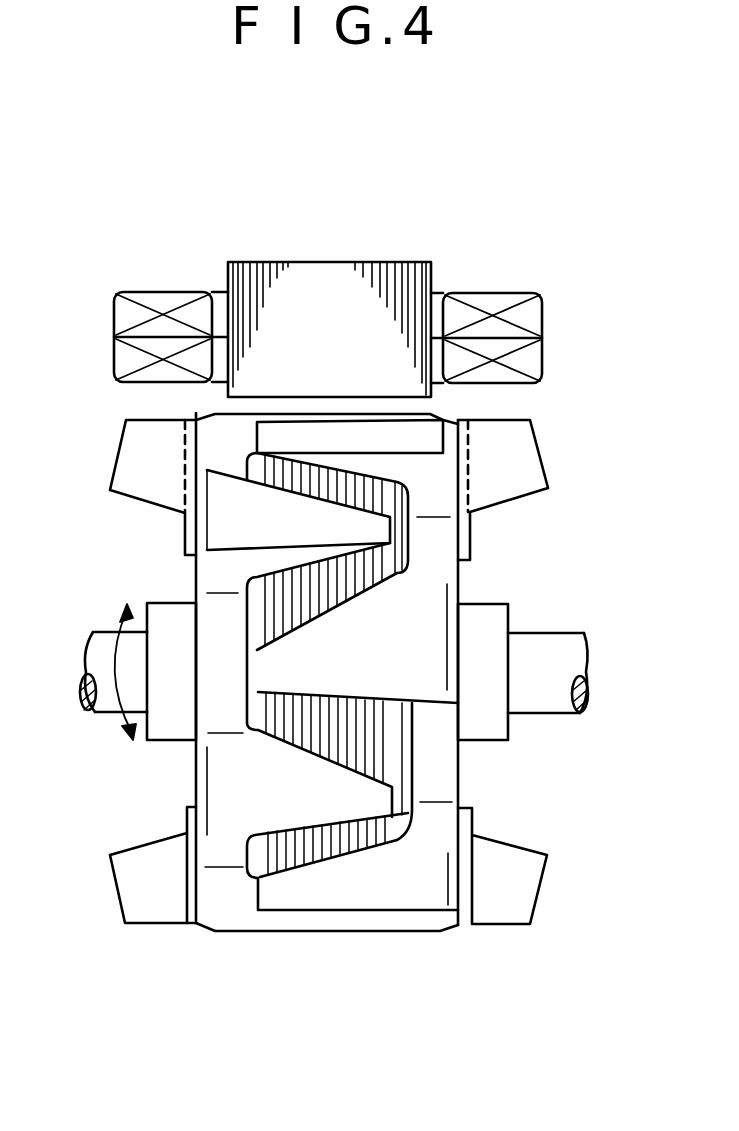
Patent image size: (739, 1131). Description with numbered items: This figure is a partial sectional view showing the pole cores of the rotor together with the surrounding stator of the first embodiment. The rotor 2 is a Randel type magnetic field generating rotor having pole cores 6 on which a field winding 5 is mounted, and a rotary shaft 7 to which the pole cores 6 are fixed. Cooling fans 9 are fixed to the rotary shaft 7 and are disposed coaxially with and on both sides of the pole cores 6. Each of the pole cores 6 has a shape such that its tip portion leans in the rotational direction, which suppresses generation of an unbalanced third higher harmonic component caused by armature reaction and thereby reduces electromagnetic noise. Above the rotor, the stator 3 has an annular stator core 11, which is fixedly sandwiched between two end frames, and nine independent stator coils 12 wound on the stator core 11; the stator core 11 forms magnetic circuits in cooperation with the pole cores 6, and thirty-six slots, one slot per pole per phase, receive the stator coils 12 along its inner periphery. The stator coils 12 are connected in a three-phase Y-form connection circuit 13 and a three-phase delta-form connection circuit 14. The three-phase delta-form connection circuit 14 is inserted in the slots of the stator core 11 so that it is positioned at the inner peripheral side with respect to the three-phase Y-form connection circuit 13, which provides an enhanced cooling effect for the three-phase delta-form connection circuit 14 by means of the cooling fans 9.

The rotor 2 is at (195, 414).
The stator 3 is at (285, 283).
The field winding 5 is at (392, 760).
The pole cores 6 is at (277, 650).
The rotary shaft 7 is at (555, 650).
The cooling fans 9 is at (135, 458).
The stator core 11 is at (304, 292).
The stator coils 12 is at (519, 300).
The three-phase Y-form connection circuit 13 is at (490, 300).
The three-phase delta-form connection circuit 14 is at (528, 362).